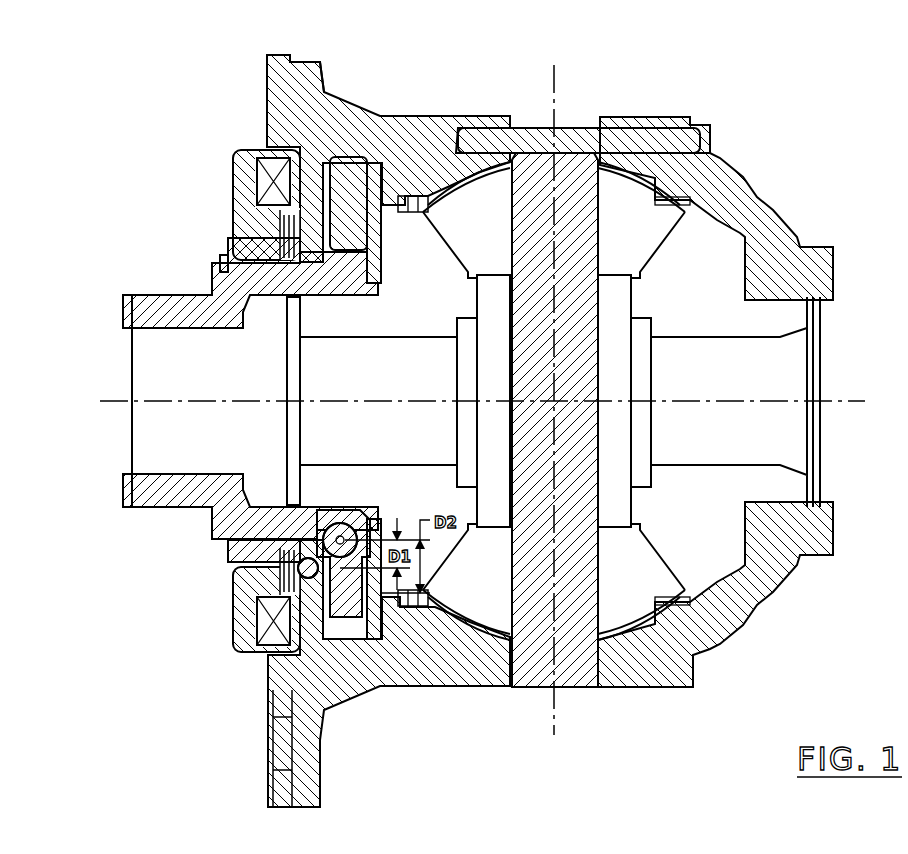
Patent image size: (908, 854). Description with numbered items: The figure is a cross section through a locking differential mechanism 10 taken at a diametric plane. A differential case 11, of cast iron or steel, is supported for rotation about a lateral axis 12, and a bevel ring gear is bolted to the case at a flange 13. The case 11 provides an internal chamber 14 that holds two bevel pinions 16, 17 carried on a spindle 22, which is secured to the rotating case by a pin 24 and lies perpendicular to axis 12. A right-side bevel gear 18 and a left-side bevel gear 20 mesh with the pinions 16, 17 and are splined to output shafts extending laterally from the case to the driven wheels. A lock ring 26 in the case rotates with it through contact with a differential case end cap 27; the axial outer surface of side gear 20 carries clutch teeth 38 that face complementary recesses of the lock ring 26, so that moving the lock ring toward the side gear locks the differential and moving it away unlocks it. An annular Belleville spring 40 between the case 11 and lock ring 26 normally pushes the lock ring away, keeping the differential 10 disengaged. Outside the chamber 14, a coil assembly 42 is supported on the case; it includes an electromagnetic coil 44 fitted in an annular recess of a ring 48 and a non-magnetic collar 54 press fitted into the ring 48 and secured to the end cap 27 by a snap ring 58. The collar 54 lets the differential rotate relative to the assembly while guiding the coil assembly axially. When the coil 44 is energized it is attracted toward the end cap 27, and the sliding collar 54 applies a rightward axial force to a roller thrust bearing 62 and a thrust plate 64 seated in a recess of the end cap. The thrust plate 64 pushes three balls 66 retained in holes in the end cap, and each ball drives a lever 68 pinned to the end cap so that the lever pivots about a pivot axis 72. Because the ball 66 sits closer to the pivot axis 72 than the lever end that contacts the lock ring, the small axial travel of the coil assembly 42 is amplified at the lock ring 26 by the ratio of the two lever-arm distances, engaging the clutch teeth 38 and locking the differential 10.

The differential mechanism 10 is at (823, 120).
The differential case 11 is at (400, 120).
The lateral axis 12 is at (826, 397).
The flange 13 is at (300, 102).
The internal chamber 14 is at (687, 205).
The bevel pinion 16 is at (620, 197).
The bevel pinion 17 is at (628, 587).
The right-side bevel gear 18 is at (653, 401).
The left-side bevel gear 20 is at (456, 401).
The spindle 22 is at (573, 663).
The pin 24 is at (603, 137).
The lock ring 26 is at (378, 200).
The differential case end cap 27 is at (137, 295).
The clutch teeth 38 is at (375, 262).
The annular Belleville spring 40 is at (395, 190).
The coil assembly 42 is at (187, 157).
The electromagnetic coil 44 is at (255, 180).
The ring 48 is at (233, 620).
The non-magnetic collar 54 is at (290, 232).
The snap ring 58 is at (218, 262).
The roller thrust bearing 62 is at (262, 198).
The thrust plate 64 is at (351, 173).
The ball 66 is at (280, 583).
The lever 68 is at (300, 574).
The pivot axis 72 is at (327, 535).